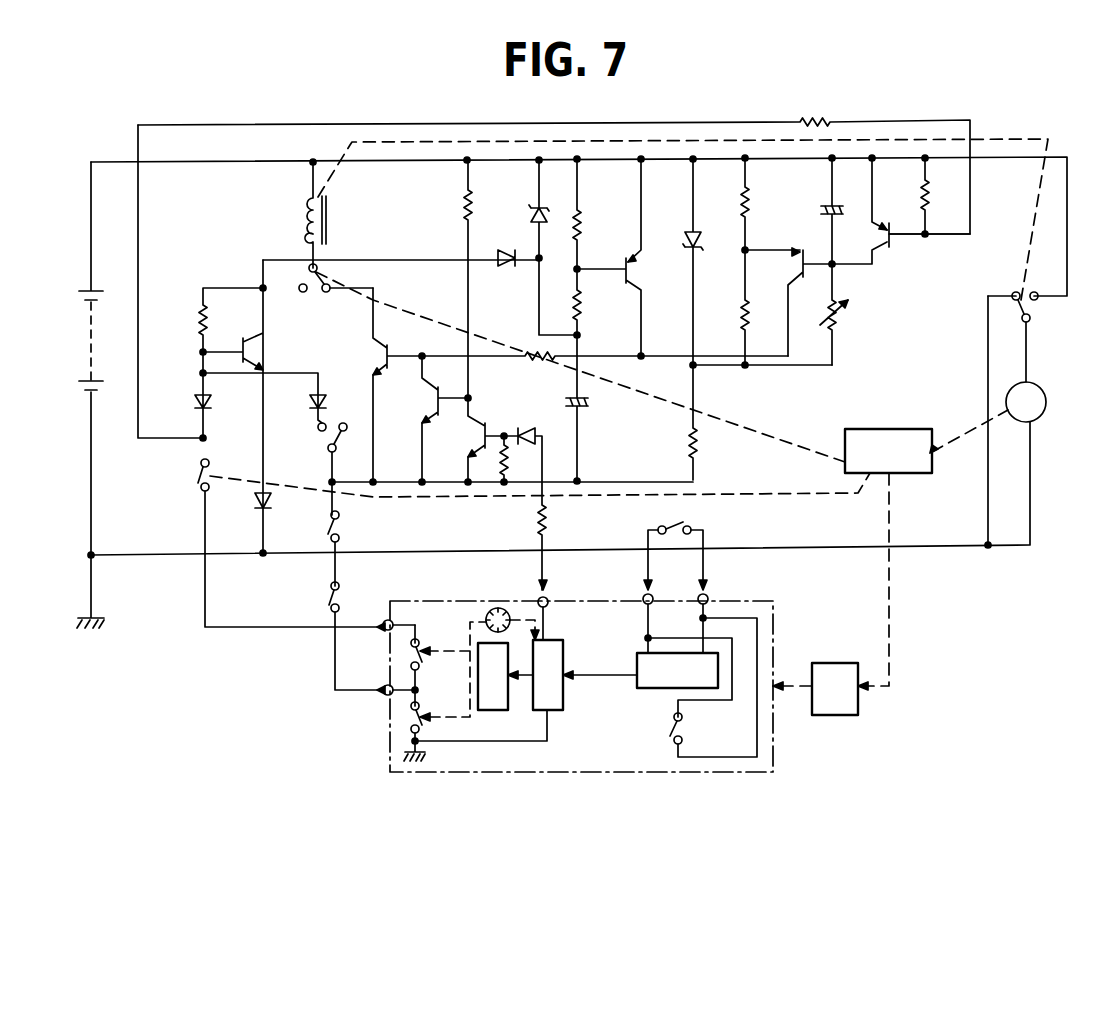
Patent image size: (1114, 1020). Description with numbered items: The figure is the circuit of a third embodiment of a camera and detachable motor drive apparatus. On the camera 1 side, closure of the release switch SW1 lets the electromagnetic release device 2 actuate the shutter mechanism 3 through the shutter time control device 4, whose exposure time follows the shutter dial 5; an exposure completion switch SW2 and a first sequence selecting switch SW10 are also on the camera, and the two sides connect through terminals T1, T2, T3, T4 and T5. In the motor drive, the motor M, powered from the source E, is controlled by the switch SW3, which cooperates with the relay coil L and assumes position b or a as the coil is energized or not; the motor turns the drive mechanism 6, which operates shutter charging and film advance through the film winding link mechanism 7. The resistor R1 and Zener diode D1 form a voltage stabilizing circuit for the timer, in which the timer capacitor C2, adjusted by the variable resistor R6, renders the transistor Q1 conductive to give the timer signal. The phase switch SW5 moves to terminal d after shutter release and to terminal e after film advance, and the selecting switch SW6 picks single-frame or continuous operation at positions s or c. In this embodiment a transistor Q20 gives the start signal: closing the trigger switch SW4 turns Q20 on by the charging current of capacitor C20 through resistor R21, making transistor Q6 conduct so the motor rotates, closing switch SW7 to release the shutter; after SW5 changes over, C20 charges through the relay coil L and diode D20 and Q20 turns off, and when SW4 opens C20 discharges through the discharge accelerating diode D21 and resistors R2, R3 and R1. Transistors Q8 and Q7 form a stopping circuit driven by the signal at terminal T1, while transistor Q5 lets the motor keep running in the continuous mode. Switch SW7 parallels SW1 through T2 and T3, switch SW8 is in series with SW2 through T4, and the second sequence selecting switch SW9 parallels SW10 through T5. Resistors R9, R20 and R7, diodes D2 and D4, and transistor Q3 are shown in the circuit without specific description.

The battery E is at (84, 341).
The relay coil L is at (335, 218).
The phase switch SW5 is at (401, 309).
The terminal d is at (302, 293).
The terminal e is at (329, 293).
The resistor R9 is at (198, 320).
The transistor Q5 is at (243, 338).
The diode D2 is at (197, 399).
The Zener diode D1 is at (310, 404).
The selecting switch SW6 is at (344, 422).
The position s is at (321, 432).
The position c is at (344, 432).
The switch SW8 is at (197, 475).
The diode D4 is at (255, 501).
The trigger switch SW4 is at (340, 528).
The second sequence selecting switch SW9 is at (328, 598).
The transistor Q6 is at (387, 345).
The transistor Q8 is at (432, 400).
The transistor Q7 is at (480, 442).
The discharge accelerating diode D21 is at (531, 215).
The diode D20 is at (505, 268).
The resistor R20 is at (583, 222).
The resistor R21 is at (583, 305).
The transistor Q20 is at (633, 284).
The capacitor C20 is at (590, 405).
The resistor R1 is at (700, 444).
The resistor R2 is at (753, 198).
The resistor R3 is at (740, 318).
The transistor Q1 is at (790, 285).
The timer capacitor C2 is at (820, 210).
The variable resistor R6 is at (842, 326).
The transistor Q3 is at (878, 252).
The resistor R7 is at (920, 194).
The switch SW3 is at (1031, 318).
The position a is at (1014, 291).
The position b is at (1035, 291).
The motor M is at (1026, 402).
The drive mechanism 6 is at (893, 429).
The switch SW7 is at (690, 524).
The camera 1 is at (775, 622).
The terminal T1 is at (547, 598).
The terminal T2 is at (707, 595).
The terminal T3 is at (652, 595).
The terminal T4 is at (385, 620).
The terminal T5 is at (383, 694).
The exposure completion switch SW2 is at (424, 650).
The first sequence selecting switch SW10 is at (424, 712).
The shutter dial 5 is at (497, 608).
The shutter mechanism 3 is at (493, 676).
The shutter time control device 4 is at (572, 675).
The electromagnetic release device 2 is at (697, 687).
The release switch SW1 is at (668, 730).
The film winding link mechanism 7 is at (838, 716).